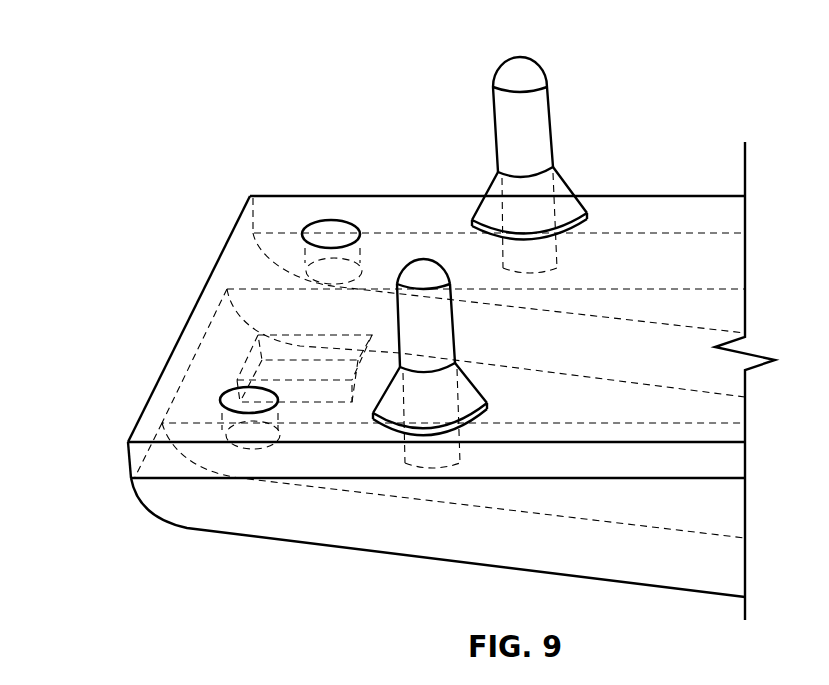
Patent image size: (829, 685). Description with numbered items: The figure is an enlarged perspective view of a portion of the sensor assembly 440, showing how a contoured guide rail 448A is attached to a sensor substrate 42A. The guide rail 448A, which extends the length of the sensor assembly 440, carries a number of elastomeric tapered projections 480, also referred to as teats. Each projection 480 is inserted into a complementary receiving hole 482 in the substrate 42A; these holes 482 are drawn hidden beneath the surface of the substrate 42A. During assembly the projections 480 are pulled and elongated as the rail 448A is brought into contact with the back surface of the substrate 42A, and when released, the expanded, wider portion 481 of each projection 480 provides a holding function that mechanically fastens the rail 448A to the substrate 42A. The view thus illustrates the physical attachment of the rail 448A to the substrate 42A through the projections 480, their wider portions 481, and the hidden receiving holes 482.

The sensor assembly 440 is at (407, 332).
The substrate 42A is at (130, 444).
The guide rail 448A is at (193, 529).
The elastomeric projection 480 is at (493, 113).
The expanded portion 481 is at (567, 187).
The receiving hole 482 is at (557, 247).